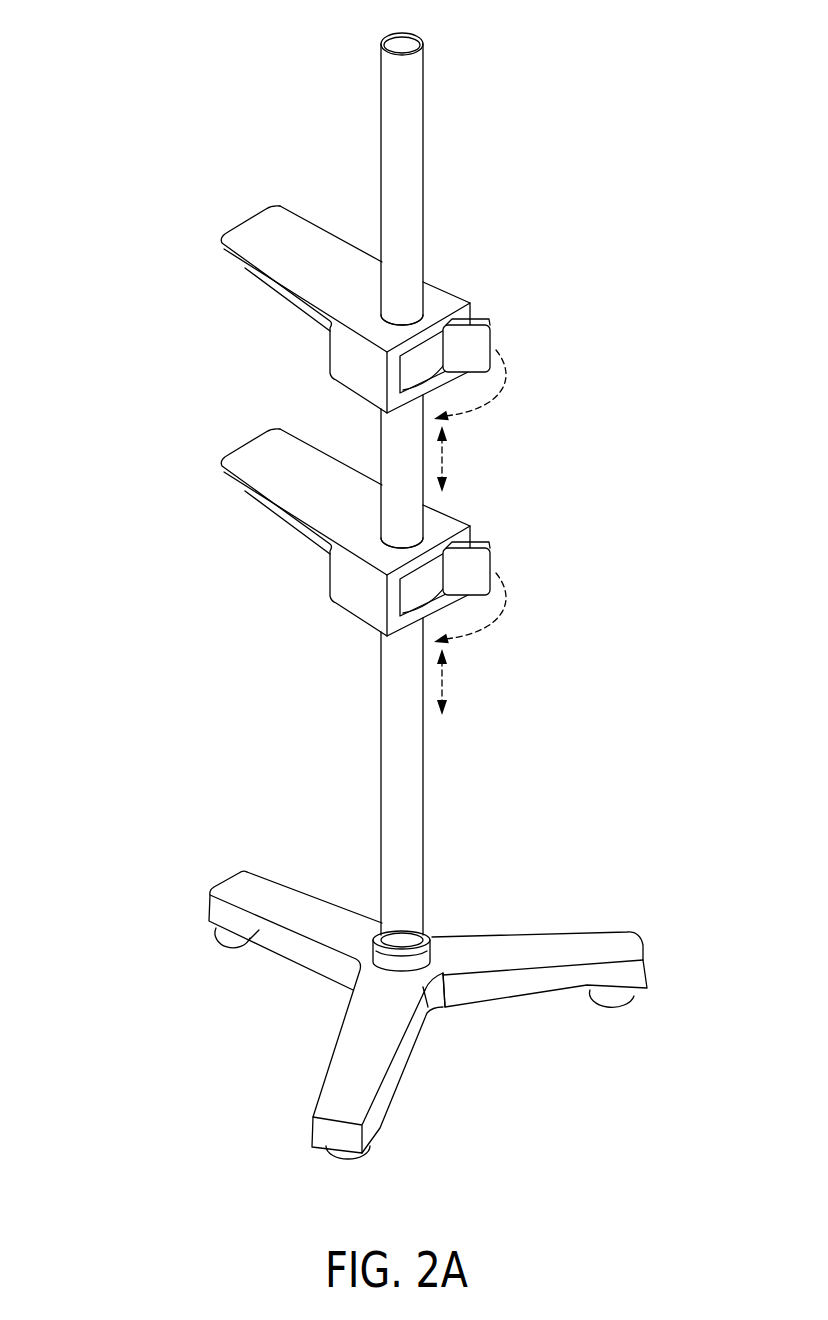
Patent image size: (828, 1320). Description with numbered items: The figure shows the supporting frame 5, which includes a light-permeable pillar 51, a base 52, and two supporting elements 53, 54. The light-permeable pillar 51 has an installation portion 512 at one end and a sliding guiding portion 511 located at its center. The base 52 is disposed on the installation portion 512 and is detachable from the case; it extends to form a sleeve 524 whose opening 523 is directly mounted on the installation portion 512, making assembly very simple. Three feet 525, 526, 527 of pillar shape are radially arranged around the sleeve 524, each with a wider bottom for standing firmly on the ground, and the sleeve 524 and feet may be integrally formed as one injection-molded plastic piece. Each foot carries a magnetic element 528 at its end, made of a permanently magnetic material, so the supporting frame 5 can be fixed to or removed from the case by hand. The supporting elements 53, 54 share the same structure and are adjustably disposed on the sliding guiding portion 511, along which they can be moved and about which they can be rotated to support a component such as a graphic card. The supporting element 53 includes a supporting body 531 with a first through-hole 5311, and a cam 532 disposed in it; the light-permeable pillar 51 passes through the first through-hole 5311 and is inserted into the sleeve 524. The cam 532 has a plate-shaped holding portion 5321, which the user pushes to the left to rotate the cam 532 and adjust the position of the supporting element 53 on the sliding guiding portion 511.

The supporting frame 5 is at (134, 66).
The light-permeable pillar 51 is at (430, 78).
The sliding guiding portion 511 is at (421, 137).
The installation portion 512 is at (372, 945).
The base 52 is at (462, 1055).
The opening 523 is at (403, 940).
The sleeve 524 is at (428, 950).
The foot 525 is at (233, 893).
The foot 526 is at (540, 937).
The foot 527 is at (352, 1052).
The magnetic element 528 is at (232, 942).
The supporting element 53 is at (495, 311).
The supporting body 531 is at (345, 352).
The first through-hole 5311 is at (423, 308).
The cam 532 is at (410, 371).
The holding portion 5321 is at (476, 346).
The supporting element 54 is at (492, 525).